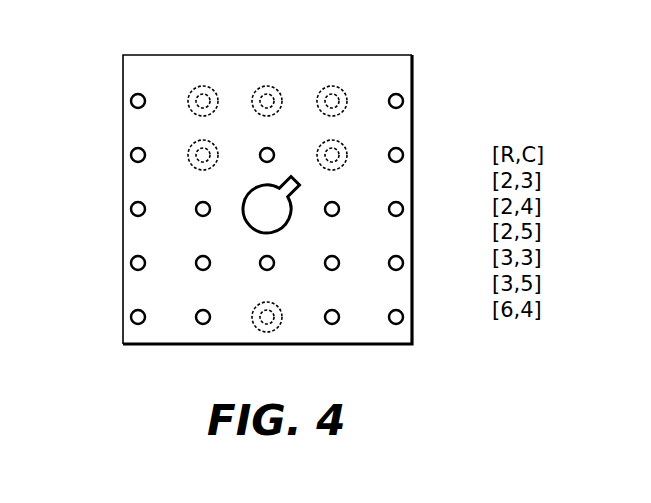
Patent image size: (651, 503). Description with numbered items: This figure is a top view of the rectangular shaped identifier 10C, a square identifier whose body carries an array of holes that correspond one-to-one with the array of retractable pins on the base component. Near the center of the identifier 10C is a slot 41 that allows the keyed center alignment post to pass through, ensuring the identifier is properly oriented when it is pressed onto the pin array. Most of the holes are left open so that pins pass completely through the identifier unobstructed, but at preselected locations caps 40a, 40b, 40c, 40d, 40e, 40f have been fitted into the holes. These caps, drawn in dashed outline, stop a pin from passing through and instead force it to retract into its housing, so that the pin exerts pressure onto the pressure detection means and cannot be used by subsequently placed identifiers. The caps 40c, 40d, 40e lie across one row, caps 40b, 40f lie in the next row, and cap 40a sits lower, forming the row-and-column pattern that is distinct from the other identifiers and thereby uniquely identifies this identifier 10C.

The rectangular shaped identifier 10C is at (412, 134).
The cap 40a is at (281, 305).
The cap 40b is at (190, 165).
The cap 40c is at (186, 98).
The cap 40d is at (253, 95).
The cap 40e is at (318, 97).
The cap 40f is at (343, 142).
The slot 41 is at (273, 220).